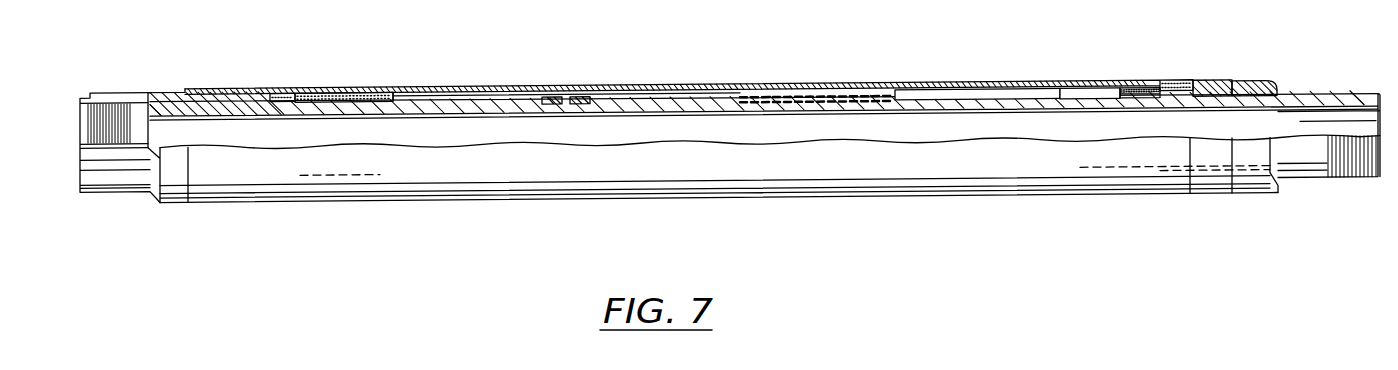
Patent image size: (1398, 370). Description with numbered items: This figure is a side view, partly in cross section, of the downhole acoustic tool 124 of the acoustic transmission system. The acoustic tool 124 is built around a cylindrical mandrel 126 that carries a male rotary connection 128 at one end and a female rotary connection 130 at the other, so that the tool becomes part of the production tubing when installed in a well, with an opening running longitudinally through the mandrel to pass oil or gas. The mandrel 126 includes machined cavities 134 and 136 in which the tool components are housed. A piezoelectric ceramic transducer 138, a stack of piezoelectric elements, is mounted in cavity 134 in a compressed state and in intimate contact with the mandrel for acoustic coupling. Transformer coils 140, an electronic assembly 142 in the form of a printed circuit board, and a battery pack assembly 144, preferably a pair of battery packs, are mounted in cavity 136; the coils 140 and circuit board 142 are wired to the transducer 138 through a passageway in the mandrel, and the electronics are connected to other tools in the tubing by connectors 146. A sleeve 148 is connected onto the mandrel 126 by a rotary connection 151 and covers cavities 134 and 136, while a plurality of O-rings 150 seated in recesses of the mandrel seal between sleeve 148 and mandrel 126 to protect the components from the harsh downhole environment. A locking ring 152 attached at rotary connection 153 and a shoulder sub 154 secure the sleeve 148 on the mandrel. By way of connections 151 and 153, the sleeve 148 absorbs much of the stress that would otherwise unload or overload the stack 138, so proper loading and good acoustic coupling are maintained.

The acoustic tool 124 is at (653, 44).
The cylindrical mandrel 126 is at (444, 100).
The male rotary connection 128 is at (1373, 178).
The female rotary connection 130 is at (110, 103).
The machined cavity 134 is at (383, 91).
The machined cavity 136 is at (1078, 96).
The piezoelectric ceramic transducer 138 is at (331, 95).
The transformer coils 140 is at (567, 101).
The electronic assembly 142 is at (825, 99).
The battery pack assembly 144 is at (984, 94).
The connectors 146 is at (1162, 90).
The sleeve 148 is at (270, 93).
The O-rings 150 is at (237, 92).
The rotary connection 151 is at (222, 93).
The locking ring 152 is at (1258, 196).
The rotary connection 153 is at (1273, 86).
The shoulder sub 154 is at (1211, 82).